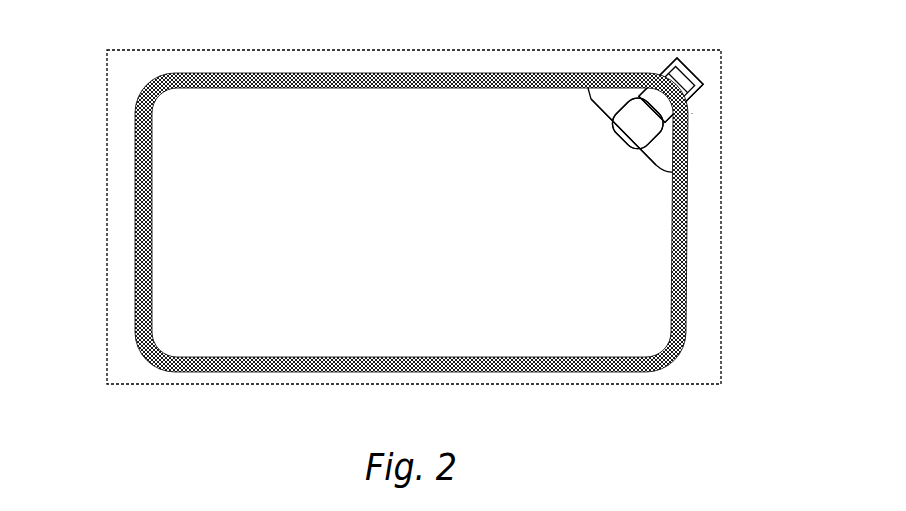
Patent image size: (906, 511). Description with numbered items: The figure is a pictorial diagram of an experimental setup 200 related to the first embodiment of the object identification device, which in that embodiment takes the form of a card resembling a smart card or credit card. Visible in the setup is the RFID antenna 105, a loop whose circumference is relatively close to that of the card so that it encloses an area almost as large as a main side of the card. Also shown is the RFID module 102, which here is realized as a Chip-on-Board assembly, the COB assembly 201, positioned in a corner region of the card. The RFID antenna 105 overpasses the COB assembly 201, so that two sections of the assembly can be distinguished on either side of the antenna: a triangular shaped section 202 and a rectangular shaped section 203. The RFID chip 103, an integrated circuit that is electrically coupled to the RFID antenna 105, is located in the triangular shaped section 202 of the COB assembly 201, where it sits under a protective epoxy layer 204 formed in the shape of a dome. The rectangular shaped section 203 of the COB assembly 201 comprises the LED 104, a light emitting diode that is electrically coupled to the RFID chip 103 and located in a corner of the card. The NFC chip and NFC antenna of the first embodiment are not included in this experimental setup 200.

The experimental setup 200 is at (78, 48).
The RFID module 102 is at (650, 67).
The RFID chip 103 is at (637, 128).
The LED 104 is at (683, 72).
The RFID antenna 105 is at (688, 235).
The COB assembly 201 is at (692, 113).
The triangular shaped section 202 is at (602, 110).
The rectangular shaped section 203 is at (705, 85).
The protective epoxy layer 204 is at (600, 155).